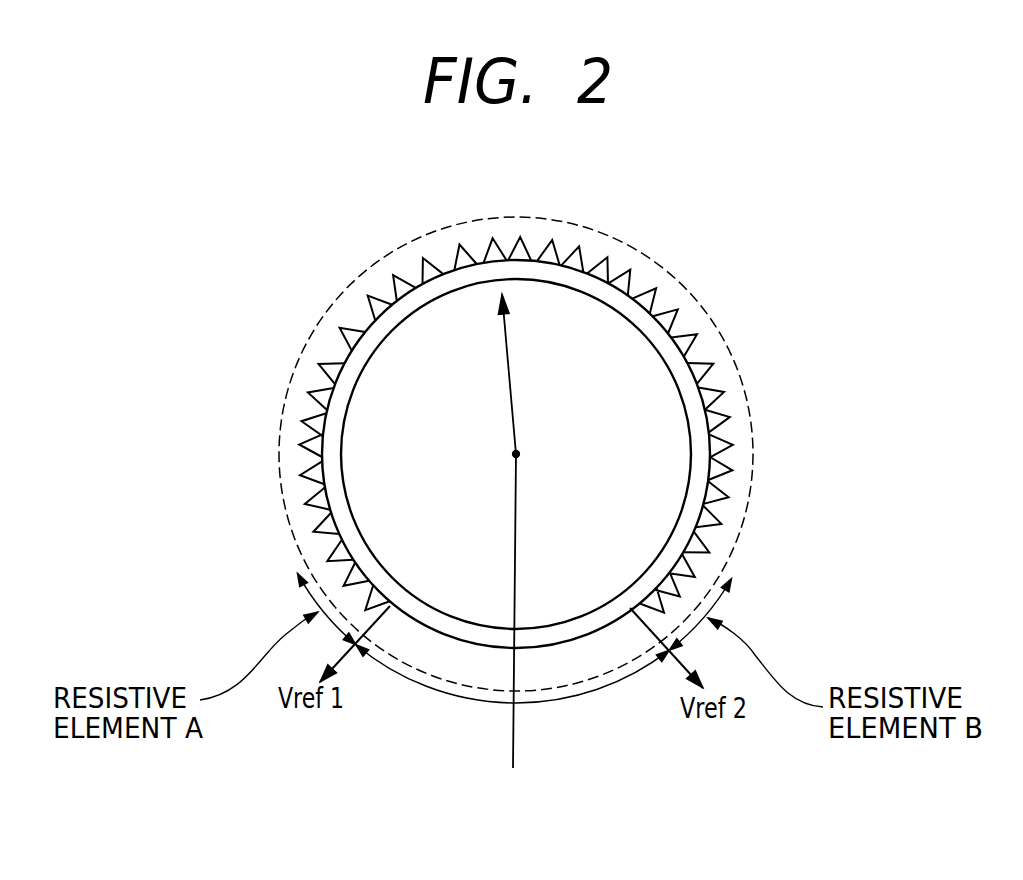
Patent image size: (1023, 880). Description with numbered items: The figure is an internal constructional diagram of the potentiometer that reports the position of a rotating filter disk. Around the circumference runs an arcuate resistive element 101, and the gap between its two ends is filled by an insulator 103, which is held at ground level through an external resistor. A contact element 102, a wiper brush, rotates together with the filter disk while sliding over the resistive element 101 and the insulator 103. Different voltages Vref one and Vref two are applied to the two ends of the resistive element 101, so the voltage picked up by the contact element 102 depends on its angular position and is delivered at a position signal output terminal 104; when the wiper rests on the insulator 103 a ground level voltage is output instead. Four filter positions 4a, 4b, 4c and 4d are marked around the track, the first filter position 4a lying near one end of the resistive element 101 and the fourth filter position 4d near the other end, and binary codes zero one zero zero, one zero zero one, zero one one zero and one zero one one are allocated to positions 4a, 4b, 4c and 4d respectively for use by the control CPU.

The resistive element 101 is at (680, 327).
The contact element 102 is at (517, 392).
The insulator 103 is at (605, 690).
The position signal output terminal 104 is at (515, 745).
The filter position 4a is at (387, 519).
The filter position 4b is at (428, 347).
The filter position 4c is at (608, 347).
The filter position 4d is at (632, 528).